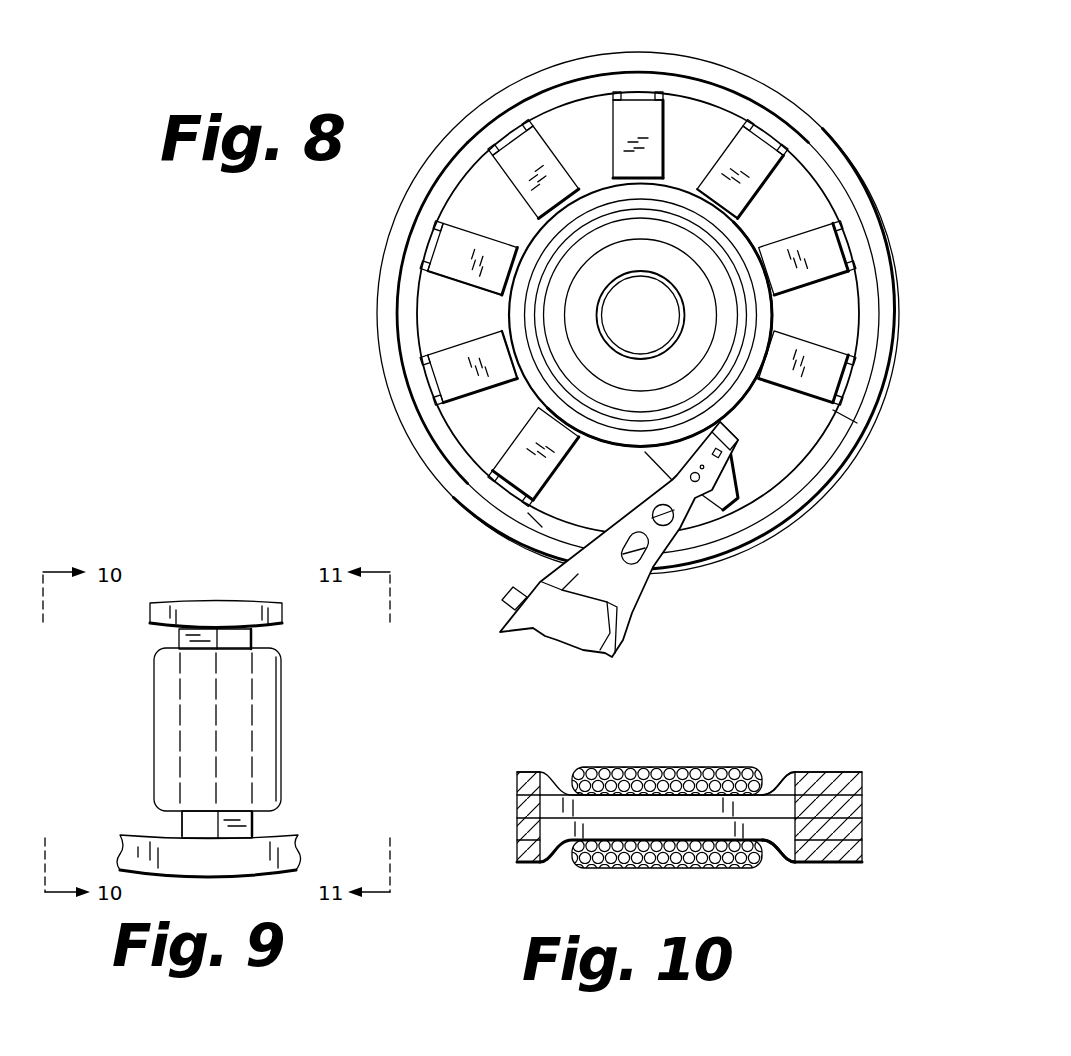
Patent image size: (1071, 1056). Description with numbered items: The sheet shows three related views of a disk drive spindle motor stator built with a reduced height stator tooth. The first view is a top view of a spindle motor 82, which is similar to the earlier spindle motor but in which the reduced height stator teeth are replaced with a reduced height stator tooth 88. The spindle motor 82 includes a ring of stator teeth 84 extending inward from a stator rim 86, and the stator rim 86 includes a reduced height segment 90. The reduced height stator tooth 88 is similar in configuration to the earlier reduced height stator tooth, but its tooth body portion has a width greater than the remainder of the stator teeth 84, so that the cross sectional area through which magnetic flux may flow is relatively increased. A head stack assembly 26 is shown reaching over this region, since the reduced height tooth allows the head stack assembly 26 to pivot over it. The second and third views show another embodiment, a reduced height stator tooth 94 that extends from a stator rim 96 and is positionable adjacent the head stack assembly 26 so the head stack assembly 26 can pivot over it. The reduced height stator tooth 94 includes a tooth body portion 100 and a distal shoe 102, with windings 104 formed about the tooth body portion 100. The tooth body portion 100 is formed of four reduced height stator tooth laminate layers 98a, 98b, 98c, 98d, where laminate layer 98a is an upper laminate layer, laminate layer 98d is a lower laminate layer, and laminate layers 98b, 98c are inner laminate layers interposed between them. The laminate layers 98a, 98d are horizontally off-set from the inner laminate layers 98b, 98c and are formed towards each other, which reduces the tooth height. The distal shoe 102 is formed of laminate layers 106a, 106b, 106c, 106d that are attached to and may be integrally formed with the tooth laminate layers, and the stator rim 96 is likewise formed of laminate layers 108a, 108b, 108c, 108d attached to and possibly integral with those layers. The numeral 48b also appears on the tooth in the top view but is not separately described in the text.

In FIG. 8, the head stack assembly 26 is at (627, 630).
In FIG. 8, the spindle motor 82 is at (358, 243).
In FIG. 8, the stator teeth 84 is at (478, 237).
In FIG. 8, the stator rim 86 is at (858, 383).
In FIG. 8, the reduced height stator tooth 88 is at (860, 234).
In FIG. 8, the reduced height segment 90 is at (828, 450).
In FIG. 9, the reduced height stator tooth 94 is at (337, 602).
In FIG. 10, the reduced height stator tooth 94 is at (690, 815).
In FIG. 9, the stator rim 96 is at (241, 876).
In FIG. 10, the stator rim 96 is at (863, 781).
In FIG. 9, the reduced height stator tooth laminate layer 98a is at (253, 818).
In FIG. 10, the reduced height stator tooth laminate layer 98a is at (783, 783).
In FIG. 10, the reduced height stator tooth laminate layer 98b is at (637, 809).
In FIG. 10, the reduced height stator tooth laminate layer 98c is at (676, 831).
In FIG. 10, the reduced height stator tooth laminate layer 98d is at (778, 853).
In FIG. 9, the tooth body portion 100 is at (186, 732).
In FIG. 10, the tooth body portion 100 is at (668, 796).
In FIG. 9, the distal shoe 102 is at (186, 598).
In FIG. 10, the distal shoe 102 is at (501, 785).
In FIG. 9, the windings 104 is at (275, 718).
In FIG. 10, the windings 104 is at (667, 772).
In FIG. 9, the laminate layer 106a is at (227, 590).
In FIG. 10, the laminate layer 106a is at (518, 781).
In FIG. 10, the laminate layer 106b is at (518, 806).
In FIG. 10, the laminate layer 106c is at (518, 829).
In FIG. 10, the laminate layer 106d is at (518, 851).
In FIG. 9, the laminate layer 108a is at (224, 880).
In FIG. 10, the laminate layer 108a is at (862, 782).
In FIG. 10, the laminate layer 108b is at (862, 806).
In FIG. 10, the laminate layer 108c is at (862, 829).
In FIG. 10, the laminate layer 108d is at (863, 846).
In FIG. 9, the connector 48b is at (183, 823).